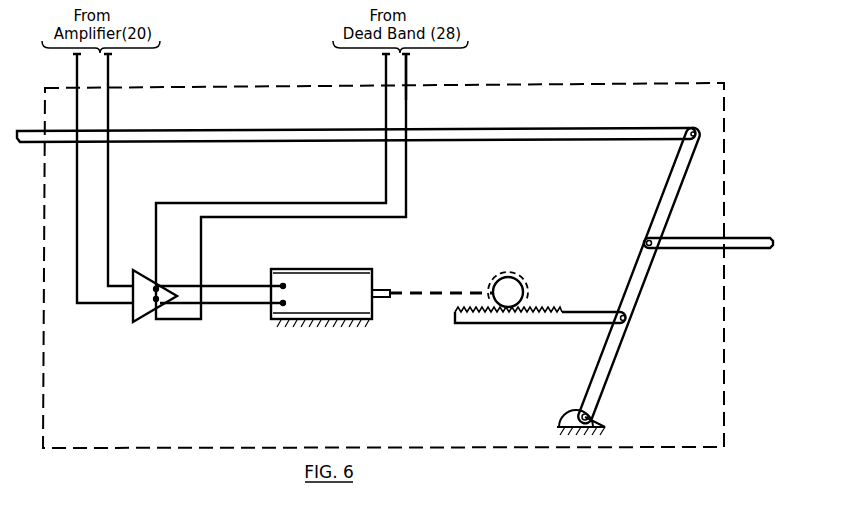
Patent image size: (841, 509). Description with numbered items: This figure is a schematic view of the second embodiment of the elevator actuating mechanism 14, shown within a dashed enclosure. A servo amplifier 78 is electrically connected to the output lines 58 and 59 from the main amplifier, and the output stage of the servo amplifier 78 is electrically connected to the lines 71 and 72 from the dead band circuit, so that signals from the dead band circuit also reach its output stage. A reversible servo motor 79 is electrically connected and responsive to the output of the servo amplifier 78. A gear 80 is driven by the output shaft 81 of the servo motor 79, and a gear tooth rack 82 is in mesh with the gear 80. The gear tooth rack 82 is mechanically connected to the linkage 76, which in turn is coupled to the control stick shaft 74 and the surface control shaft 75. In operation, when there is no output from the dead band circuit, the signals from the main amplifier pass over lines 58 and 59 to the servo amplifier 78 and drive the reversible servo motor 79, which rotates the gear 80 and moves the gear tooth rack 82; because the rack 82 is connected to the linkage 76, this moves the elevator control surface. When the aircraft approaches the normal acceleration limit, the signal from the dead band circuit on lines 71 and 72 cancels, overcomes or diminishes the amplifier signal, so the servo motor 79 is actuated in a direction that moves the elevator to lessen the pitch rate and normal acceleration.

The elevator actuating mechanism 14 is at (578, 95).
The lead from the amplifier 58 is at (75, 66).
The lead from the amplifier 59 is at (110, 71).
The line from the dead band circuit 71 is at (385, 68).
The line from the dead band circuit 72 is at (408, 71).
The control stick shaft 74 is at (573, 135).
The surface control shaft 75 is at (742, 242).
The linkage 76 is at (632, 293).
The servo amplifier 78 is at (137, 313).
The reversible servo motor 79 is at (332, 310).
The gear 80 is at (510, 280).
The output shaft 81 is at (385, 284).
The gear tooth rack 82 is at (523, 318).